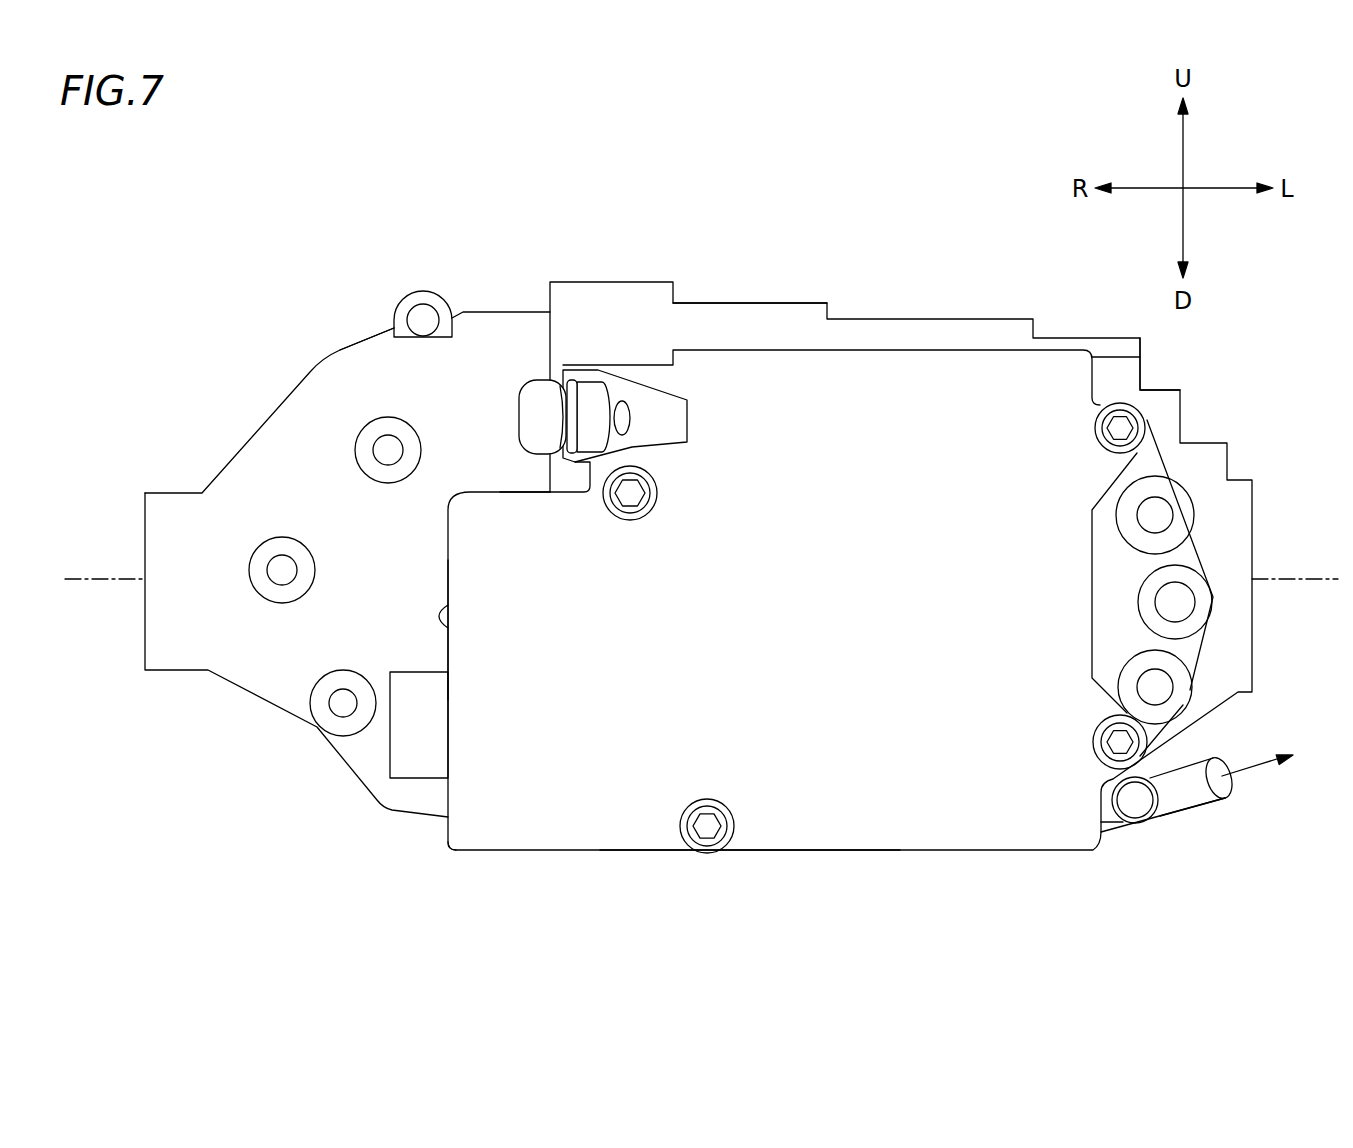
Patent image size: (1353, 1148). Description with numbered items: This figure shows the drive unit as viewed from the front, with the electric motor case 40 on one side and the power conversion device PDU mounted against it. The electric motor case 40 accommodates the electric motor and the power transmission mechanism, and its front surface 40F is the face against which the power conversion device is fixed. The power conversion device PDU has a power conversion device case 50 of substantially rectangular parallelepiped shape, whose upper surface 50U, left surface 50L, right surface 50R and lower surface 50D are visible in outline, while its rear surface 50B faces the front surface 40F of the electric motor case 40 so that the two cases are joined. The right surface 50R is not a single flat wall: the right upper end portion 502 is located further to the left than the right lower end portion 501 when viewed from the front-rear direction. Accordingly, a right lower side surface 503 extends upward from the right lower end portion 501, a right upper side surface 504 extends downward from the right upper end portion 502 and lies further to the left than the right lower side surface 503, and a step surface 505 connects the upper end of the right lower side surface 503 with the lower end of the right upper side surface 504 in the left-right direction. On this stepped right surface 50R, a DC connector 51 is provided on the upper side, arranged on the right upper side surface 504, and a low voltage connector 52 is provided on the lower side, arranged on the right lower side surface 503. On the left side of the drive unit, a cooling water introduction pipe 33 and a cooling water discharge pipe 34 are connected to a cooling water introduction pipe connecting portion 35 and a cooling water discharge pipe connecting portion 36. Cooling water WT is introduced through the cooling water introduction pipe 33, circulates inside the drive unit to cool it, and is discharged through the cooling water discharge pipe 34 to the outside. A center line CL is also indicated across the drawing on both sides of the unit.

The electric motor case 40 is at (330, 377).
The front surface of the electric motor case 40F is at (487, 438).
The power conversion device case 50 is at (918, 387).
The power conversion device PDU is at (820, 390).
The upper surface 50U is at (737, 350).
The left surface 50L is at (1095, 382).
The right surface 50R is at (447, 545).
The lower surface 50D is at (787, 852).
The rear surface 50B is at (862, 695).
The right lower end portion 501 is at (455, 853).
The right upper end portion 502 is at (562, 370).
The right lower side surface 503 is at (450, 612).
The right upper side surface 504 is at (573, 493).
The step surface 505 is at (505, 490).
The DC connector 51 is at (532, 437).
The low voltage connector 52 is at (408, 767).
The cooling water introduction pipe 33 is at (1152, 778).
The cooling water discharge pipe 34 is at (1205, 800).
The cooling water introduction pipe connecting portion 35 is at (1124, 828).
The cooling water discharge pipe connecting portion 36 is at (1105, 803).
The center line CL is at (85, 578).
The cooling water WT is at (1277, 755).